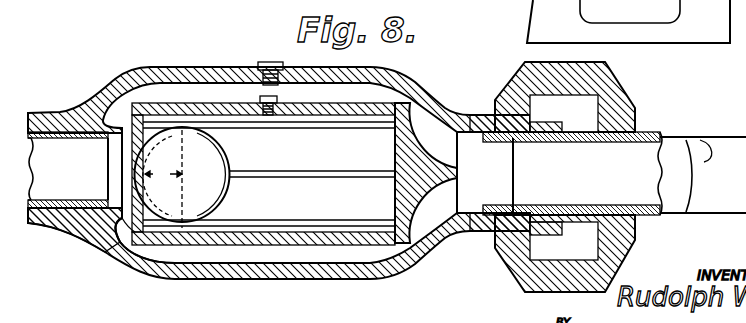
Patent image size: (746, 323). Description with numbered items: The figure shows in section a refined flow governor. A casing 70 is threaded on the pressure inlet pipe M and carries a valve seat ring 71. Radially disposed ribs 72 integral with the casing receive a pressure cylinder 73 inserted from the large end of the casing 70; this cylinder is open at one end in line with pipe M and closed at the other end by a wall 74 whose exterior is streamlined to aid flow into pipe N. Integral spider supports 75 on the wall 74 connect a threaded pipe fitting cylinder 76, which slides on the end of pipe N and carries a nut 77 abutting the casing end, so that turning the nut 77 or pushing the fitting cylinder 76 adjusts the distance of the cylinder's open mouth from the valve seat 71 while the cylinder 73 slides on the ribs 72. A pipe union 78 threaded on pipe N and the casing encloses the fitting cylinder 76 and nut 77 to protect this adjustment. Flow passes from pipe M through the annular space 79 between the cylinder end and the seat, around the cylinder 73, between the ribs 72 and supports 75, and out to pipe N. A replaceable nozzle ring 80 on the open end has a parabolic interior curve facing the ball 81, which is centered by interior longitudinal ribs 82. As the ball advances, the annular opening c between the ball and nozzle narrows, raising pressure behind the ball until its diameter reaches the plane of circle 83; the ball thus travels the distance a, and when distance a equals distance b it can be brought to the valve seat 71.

The casing 70 is at (279, 176).
The valve seat ring 71 is at (108, 146).
The radially disposed ribs 72 is at (299, 91).
The pressure cylinder 73 is at (222, 102).
The wall 74 is at (440, 163).
The spider supports 75 is at (443, 207).
The threaded pipe fitting cylinder 76 is at (565, 136).
The nut 77 is at (555, 224).
The pipe union 78 is at (618, 100).
The annular space 79 is at (121, 224).
The nozzle ring 80 is at (157, 238).
The ball 81 is at (205, 150).
The interior longitudinal ribs 82 is at (323, 118).
The circle 83 is at (123, 127).
The pressure inlet pipe M is at (50, 153).
The pipe N is at (687, 157).
The distance a is at (163, 174).
The distance b is at (143, 196).
The annular opening c is at (134, 229).